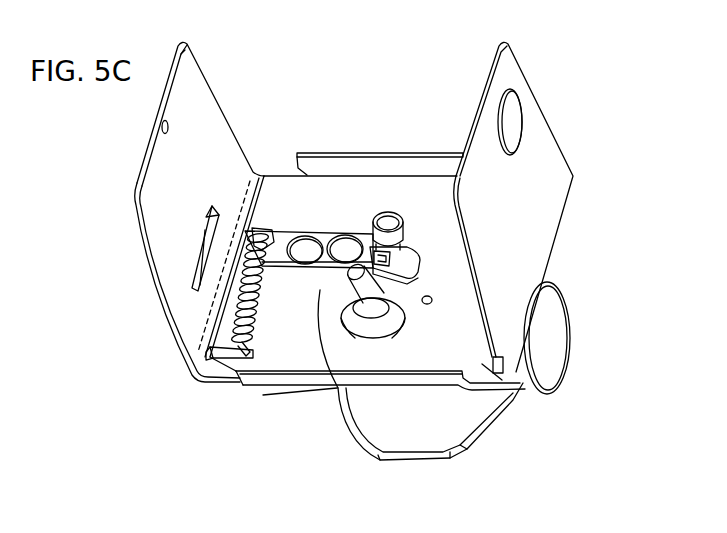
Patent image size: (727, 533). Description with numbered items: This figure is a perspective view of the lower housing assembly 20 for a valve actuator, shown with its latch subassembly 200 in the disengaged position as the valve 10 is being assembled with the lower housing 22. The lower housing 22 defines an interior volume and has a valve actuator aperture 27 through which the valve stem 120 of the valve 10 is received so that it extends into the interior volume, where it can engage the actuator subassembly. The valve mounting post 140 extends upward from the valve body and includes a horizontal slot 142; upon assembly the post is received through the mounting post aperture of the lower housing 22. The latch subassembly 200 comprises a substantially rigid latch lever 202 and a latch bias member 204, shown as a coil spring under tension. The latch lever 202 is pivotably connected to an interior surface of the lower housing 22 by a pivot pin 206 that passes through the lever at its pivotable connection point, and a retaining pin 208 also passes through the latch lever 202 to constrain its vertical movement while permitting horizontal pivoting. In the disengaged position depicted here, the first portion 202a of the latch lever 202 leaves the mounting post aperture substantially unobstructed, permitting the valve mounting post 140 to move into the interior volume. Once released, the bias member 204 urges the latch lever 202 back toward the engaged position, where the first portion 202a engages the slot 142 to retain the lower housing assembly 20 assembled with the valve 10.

The valve 10 is at (532, 462).
The lower housing assembly 20 is at (616, 50).
The lower housing 22 is at (543, 153).
The valve actuator aperture 27 is at (407, 311).
The valve stem 120 is at (363, 292).
The valve mounting post 140 is at (387, 222).
The horizontal slot 142 is at (387, 258).
The latch subassembly 200 is at (325, 185).
The latch lever 202 is at (283, 242).
The first portion of the latch lever 202a is at (408, 250).
The latch bias member 204 is at (237, 320).
The pivot pin 206 is at (303, 252).
The retaining pin 208 is at (343, 252).